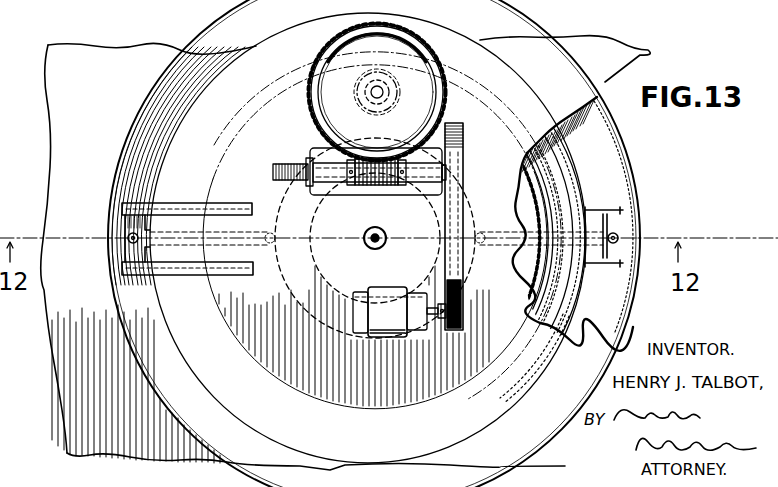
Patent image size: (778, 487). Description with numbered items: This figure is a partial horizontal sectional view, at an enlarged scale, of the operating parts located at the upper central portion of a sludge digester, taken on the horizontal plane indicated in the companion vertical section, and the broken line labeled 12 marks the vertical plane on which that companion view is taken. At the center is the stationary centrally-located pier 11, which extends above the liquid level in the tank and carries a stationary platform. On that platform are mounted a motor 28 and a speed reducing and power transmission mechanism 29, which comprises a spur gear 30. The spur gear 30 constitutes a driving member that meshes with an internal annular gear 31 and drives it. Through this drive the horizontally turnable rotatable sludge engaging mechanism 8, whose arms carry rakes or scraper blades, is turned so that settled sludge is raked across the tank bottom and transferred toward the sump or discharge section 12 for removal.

The rotatable sludge engaging mechanism 8 is at (290, 292).
The stationary centrally-located pier 11 is at (312, 242).
The sump or discharge section 12 is at (372, 239).
The motor 28 is at (417, 322).
The speed reducing and power transmission mechanism 29 is at (410, 182).
The spur gear 30 is at (413, 82).
The internal annular gear 31 is at (522, 170).